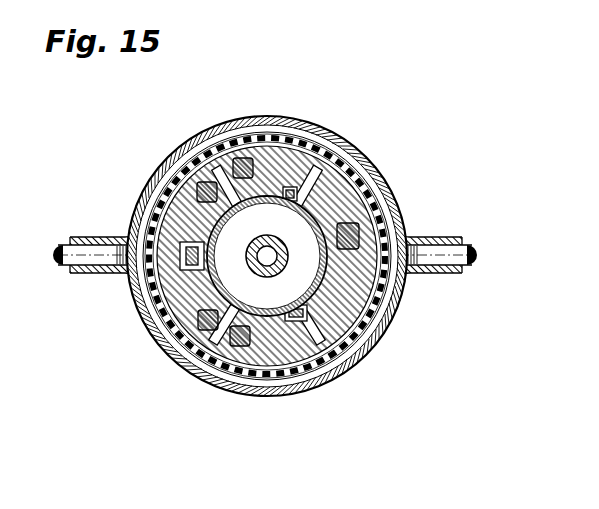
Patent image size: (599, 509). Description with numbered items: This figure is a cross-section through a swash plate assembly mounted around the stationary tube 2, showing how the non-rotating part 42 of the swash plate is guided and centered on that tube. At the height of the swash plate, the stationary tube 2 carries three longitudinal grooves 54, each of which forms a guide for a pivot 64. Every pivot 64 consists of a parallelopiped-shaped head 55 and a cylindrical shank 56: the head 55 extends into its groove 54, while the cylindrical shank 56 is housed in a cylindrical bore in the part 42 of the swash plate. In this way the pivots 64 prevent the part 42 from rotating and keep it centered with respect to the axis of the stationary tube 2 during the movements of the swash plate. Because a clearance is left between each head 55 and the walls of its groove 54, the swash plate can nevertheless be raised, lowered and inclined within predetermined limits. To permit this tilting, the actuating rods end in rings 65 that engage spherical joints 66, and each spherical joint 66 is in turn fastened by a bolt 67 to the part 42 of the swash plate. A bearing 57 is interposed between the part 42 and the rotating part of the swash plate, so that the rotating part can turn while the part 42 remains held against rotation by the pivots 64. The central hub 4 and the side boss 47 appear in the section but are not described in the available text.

The stationary tube 2 is at (363, 298).
The shaft hub 4 is at (284, 257).
The part of the swash plate 42 is at (261, 172).
The tubular boss 47 is at (140, 217).
The longitudinal groove 54 is at (299, 322).
The parallelopiped-shaped head 55 is at (185, 285).
The cylindrical shank 56 is at (335, 344).
The bearing 57 is at (172, 176).
The pivot 64 is at (326, 180).
The ring 65 is at (362, 246).
The spherical joint 66 is at (382, 236).
The bolt 67 is at (220, 182).